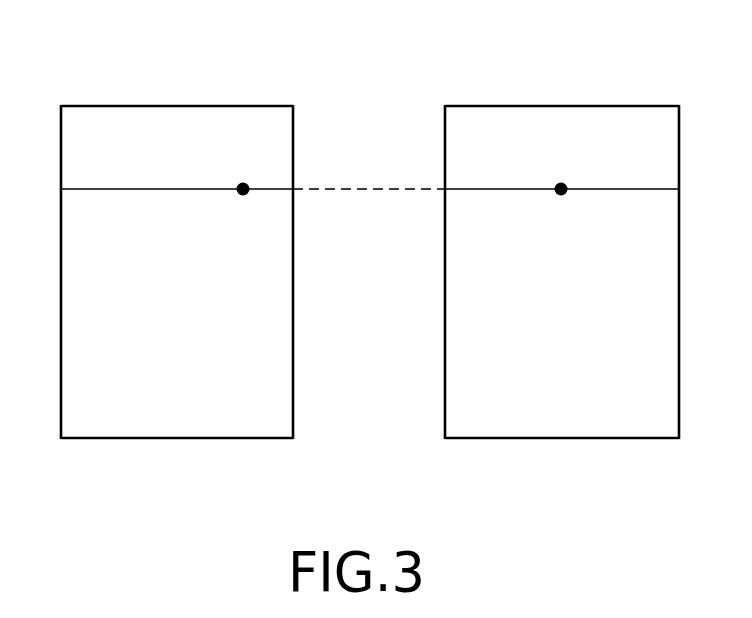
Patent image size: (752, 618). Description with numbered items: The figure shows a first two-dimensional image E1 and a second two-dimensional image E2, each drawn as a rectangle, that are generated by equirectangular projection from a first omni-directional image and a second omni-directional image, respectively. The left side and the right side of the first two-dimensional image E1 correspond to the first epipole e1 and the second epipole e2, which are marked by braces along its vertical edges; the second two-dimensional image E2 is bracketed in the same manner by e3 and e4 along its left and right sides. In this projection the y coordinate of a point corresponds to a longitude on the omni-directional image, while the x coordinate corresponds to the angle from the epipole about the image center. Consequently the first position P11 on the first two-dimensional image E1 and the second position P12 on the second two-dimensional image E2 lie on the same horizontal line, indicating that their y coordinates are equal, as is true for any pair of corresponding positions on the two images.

The first 2D image E1 is at (165, 72).
The second 2D image E2 is at (566, 72).
The first epipole e1 is at (53, 107).
The second epipole e2 is at (300, 107).
The first edge of second electrode e3 is at (438, 107).
The second edge of second electrode e4 is at (686, 107).
The first position P11 is at (243, 206).
The second position P12 is at (561, 206).